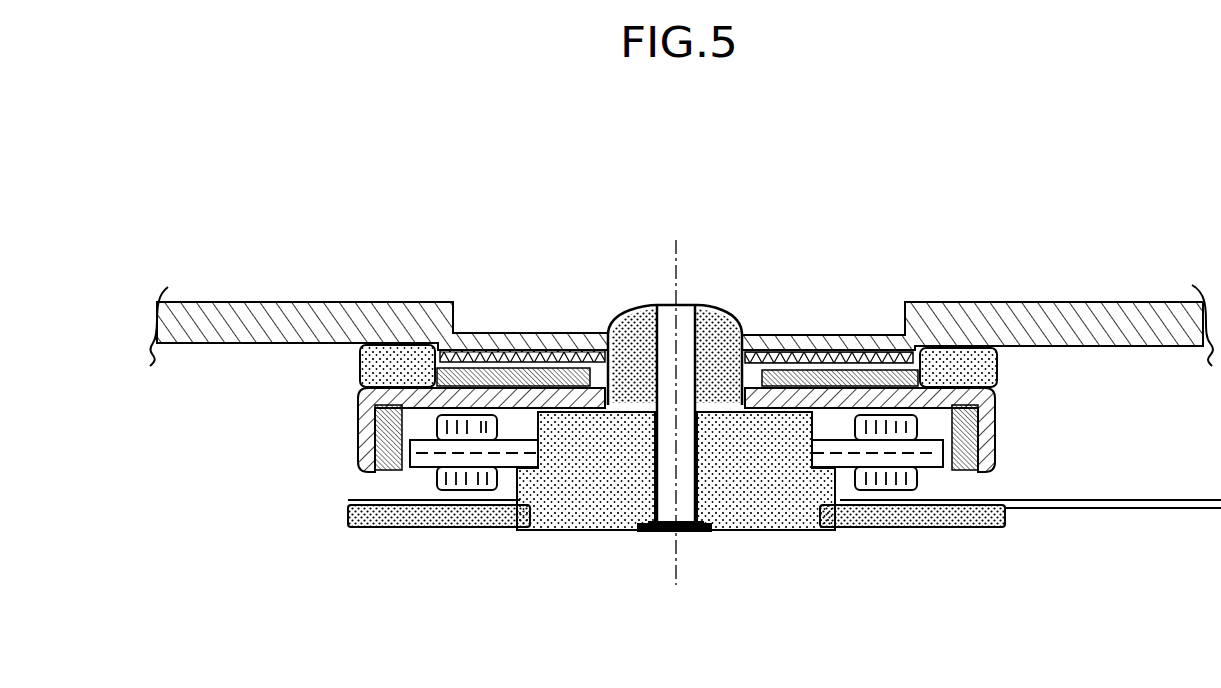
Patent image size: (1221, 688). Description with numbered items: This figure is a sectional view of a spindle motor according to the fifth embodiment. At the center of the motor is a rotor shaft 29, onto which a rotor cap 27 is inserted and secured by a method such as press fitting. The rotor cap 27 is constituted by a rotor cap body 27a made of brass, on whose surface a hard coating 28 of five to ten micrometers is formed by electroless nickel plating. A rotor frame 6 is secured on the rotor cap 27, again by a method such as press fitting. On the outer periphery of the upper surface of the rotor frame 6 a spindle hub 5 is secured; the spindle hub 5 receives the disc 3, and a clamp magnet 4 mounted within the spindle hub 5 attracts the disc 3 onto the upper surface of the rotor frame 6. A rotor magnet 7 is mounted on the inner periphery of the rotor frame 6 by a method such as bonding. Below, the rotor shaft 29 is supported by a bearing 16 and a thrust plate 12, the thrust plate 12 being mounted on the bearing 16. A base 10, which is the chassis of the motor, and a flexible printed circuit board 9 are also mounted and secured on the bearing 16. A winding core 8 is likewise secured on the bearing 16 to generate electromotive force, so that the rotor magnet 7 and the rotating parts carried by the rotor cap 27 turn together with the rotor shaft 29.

The disc 3 is at (1063, 325).
The clamp magnet 4 is at (875, 378).
The spindle hub 5 is at (998, 360).
The rotor frame 6 is at (995, 433).
The rotor magnet 7 is at (970, 476).
The winding core 8 is at (882, 462).
The flexible printed circuit board 9 is at (1160, 510).
The base 10 is at (937, 522).
The thrust plate 12 is at (650, 534).
The bearing 16 is at (765, 528).
The rotor cap 27 is at (721, 349).
The rotor cap body 27a is at (722, 308).
The hard coating 28 is at (752, 312).
The rotor shaft 29 is at (657, 394).